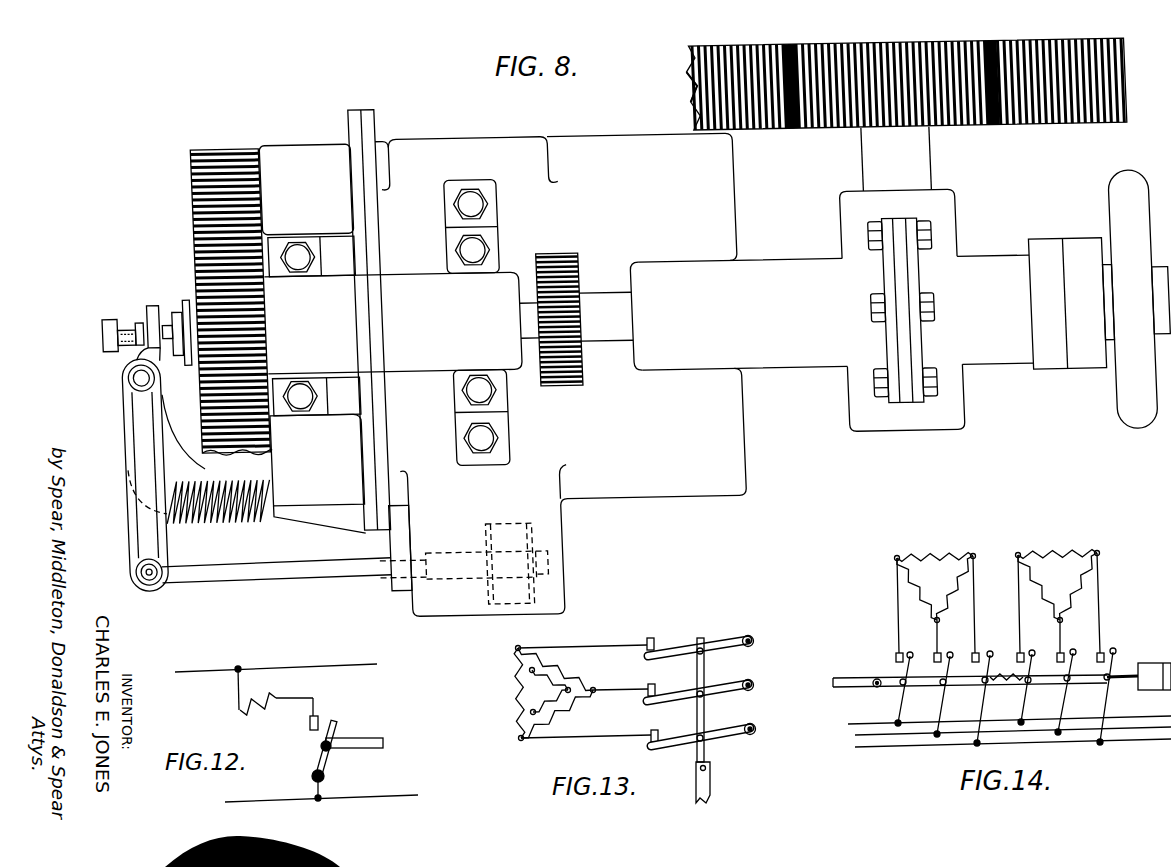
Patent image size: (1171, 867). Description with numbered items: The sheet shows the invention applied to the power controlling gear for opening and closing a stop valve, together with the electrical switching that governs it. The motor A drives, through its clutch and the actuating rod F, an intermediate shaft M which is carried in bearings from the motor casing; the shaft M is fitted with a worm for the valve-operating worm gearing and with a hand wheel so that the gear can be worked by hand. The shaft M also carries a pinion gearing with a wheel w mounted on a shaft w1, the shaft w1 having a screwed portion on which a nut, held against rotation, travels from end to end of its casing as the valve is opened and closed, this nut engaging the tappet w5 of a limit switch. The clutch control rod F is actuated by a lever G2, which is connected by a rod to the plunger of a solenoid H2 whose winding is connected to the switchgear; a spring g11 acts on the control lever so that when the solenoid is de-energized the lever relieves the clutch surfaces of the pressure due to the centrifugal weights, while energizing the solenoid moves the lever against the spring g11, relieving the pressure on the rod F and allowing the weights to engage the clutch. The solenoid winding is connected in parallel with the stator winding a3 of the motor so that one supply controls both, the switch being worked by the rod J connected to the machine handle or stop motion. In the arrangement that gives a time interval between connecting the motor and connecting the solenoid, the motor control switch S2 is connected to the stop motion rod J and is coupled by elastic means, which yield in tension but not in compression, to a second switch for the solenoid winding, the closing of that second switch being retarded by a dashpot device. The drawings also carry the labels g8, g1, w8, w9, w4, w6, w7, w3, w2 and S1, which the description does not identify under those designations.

In FIG. 8, the motor A is at (603, 152).
In FIG. 8, the shaft w1 is at (205, 187).
In FIG. 8, the wheel w is at (572, 272).
In FIG. 8, the intermediate shaft M is at (602, 338).
In FIG. 8, the clutch control rod F is at (148, 303).
In FIG. 8, the adjusting screw g8 is at (118, 316).
In FIG. 8, the lever G2 is at (162, 384).
In FIG. 8, the lever pivot g1 is at (135, 576).
In FIG. 8, the spring g11 is at (218, 518).
In FIG. 8, the connecting rod w8 is at (293, 572).
In FIG. 8, the slide w9 is at (452, 554).
In FIG. 8, the solenoid H2 is at (470, 590).
In FIG. 8, the pulley shaft bearing w4 is at (917, 175).
In FIG. 14, the pulley shaft bearing w4 is at (1102, 693).
In FIG. 8, the tappet w5 is at (926, 40).
In FIG. 14, the tappet w5 is at (1000, 675).
In FIG. 8, the belt ends w6 is at (697, 78).
In FIG. 14, the belt ends w6 is at (1150, 662).
In FIG. 8, the pulley wheel w7 is at (1112, 419).
In FIG. 12, the resistance w3 is at (258, 718).
In FIG. 13, the resistance w3 is at (540, 692).
In FIG. 14, the resistance w3 is at (997, 586).
In FIG. 12, the contact w2 is at (328, 768).
In FIG. 12, the stop motion rod J is at (359, 736).
In FIG. 13, the stop motion rod J is at (709, 788).
In FIG. 14, the stop motion rod J is at (847, 678).
In FIG. 13, the stator winding a3 is at (568, 672).
In FIG. 13, the switch contacts S1 is at (664, 665).
In FIG. 14, the motor control switch S2 is at (1005, 697).